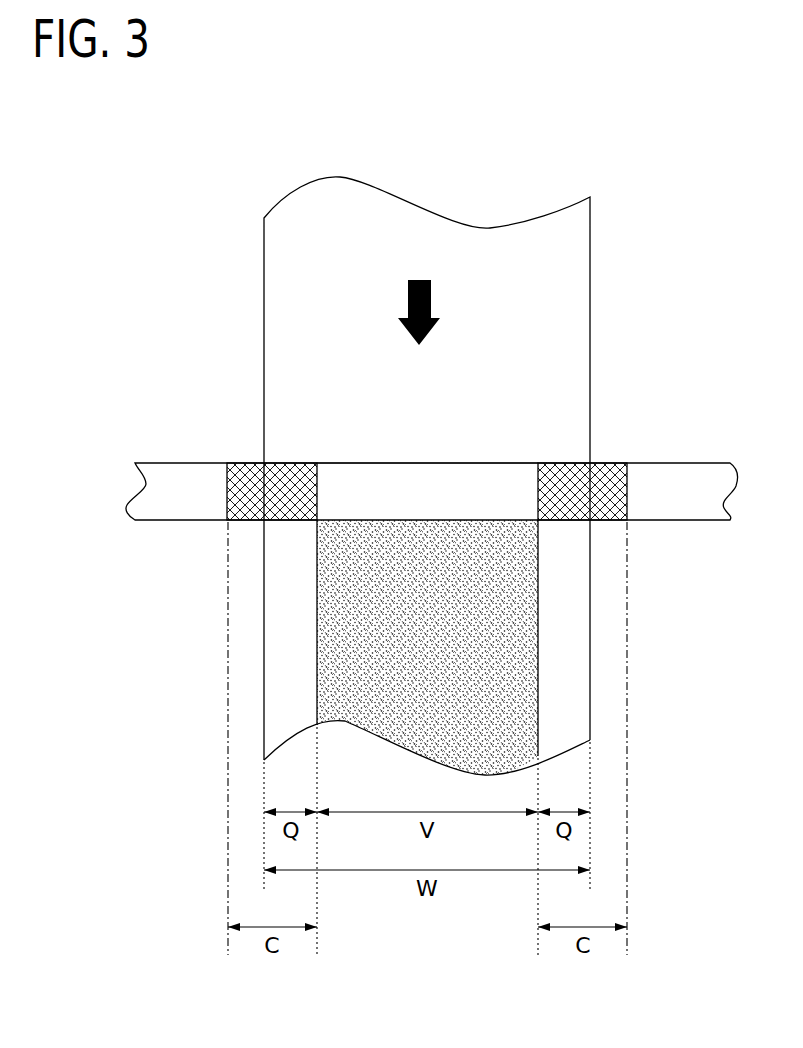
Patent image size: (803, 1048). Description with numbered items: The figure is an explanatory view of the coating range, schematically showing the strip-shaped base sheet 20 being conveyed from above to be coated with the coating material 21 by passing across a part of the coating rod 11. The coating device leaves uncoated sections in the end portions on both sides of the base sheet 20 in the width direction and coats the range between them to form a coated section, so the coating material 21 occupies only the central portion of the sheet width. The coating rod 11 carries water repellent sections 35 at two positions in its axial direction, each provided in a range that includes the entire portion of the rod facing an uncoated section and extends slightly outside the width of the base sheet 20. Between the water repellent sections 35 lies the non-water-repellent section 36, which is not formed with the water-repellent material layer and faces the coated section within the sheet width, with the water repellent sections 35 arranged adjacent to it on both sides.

The coating rod 11 is at (687, 472).
The base sheet 20 is at (563, 312).
The coating material 21 is at (520, 622).
The water repellent section 35 is at (257, 468).
The non-water-repellent section 36 is at (420, 477).